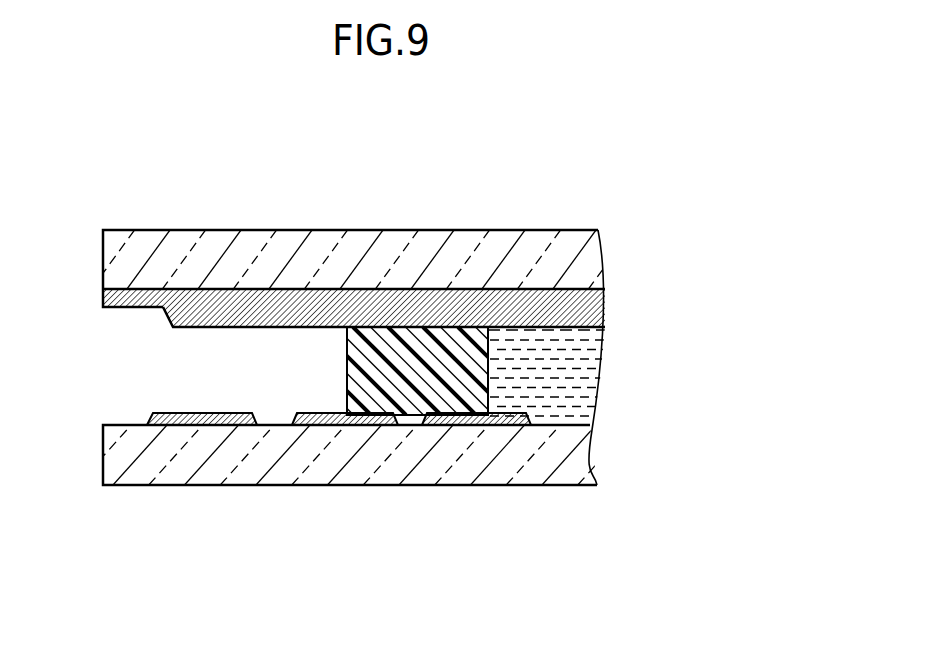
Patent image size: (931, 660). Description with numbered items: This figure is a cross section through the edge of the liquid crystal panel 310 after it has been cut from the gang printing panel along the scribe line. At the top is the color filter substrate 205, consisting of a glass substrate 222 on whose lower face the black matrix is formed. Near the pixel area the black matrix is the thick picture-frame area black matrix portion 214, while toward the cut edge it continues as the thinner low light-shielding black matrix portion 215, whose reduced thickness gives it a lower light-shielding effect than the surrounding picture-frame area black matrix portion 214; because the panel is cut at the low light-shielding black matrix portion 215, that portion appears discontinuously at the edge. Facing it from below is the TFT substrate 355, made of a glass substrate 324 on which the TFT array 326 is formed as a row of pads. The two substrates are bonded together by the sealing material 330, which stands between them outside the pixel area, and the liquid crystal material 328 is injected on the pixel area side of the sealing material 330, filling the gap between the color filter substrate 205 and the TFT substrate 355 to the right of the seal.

The liquid crystal panel 310 is at (382, 150).
The color filter substrate 205 is at (697, 272).
The glass substrate 222 is at (503, 248).
The picture-frame area black matrix portion 214 is at (237, 315).
The low light-shielding black matrix portion 215 is at (135, 296).
The sealing material 330 is at (470, 387).
The liquid crystal material 328 is at (583, 355).
The TFT substrate 355 is at (697, 447).
The glass substrate 324 is at (323, 463).
The TFT array 326 is at (200, 413).